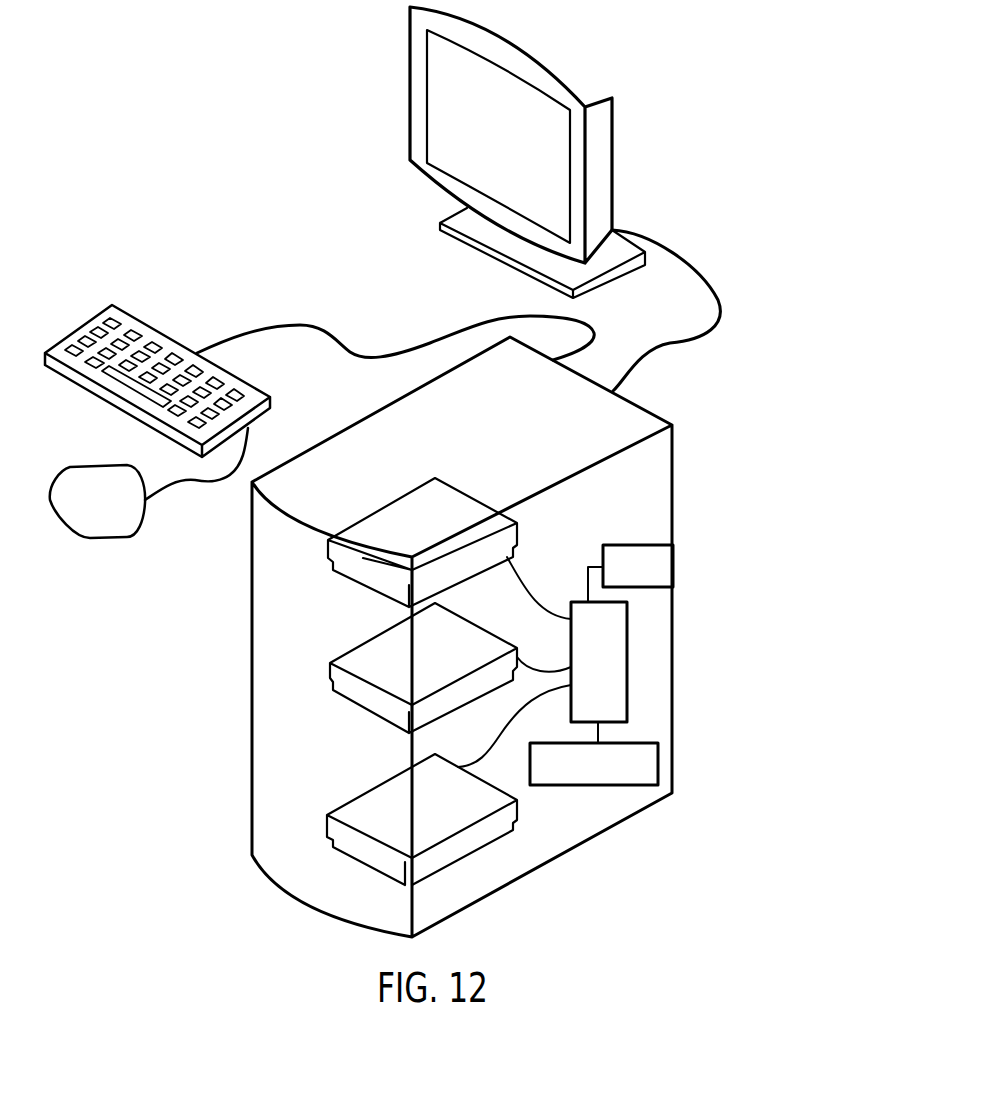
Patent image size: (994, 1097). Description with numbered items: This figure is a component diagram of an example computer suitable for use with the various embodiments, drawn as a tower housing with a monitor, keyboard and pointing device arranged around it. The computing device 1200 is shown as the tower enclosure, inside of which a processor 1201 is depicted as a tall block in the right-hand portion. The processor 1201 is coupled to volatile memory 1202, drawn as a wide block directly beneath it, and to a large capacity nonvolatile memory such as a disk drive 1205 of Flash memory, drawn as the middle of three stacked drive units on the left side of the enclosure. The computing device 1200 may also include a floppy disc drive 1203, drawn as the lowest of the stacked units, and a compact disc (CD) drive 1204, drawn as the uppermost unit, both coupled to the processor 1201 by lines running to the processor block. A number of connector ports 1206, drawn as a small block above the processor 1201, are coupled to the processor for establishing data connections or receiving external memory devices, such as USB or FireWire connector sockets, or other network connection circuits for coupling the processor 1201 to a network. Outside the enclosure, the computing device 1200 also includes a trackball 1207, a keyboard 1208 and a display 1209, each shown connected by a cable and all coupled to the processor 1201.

The computing device 1200 is at (673, 460).
The processor 1201 is at (616, 676).
The volatile memory 1202 is at (617, 779).
The floppy disc drive 1203 is at (518, 813).
The compact disc (CD) drive 1204 is at (518, 539).
The disk drive 1205 is at (477, 700).
The connector ports 1206 is at (656, 581).
The trackball 1207 is at (102, 538).
The keyboard 1208 is at (272, 405).
The display 1209 is at (612, 153).